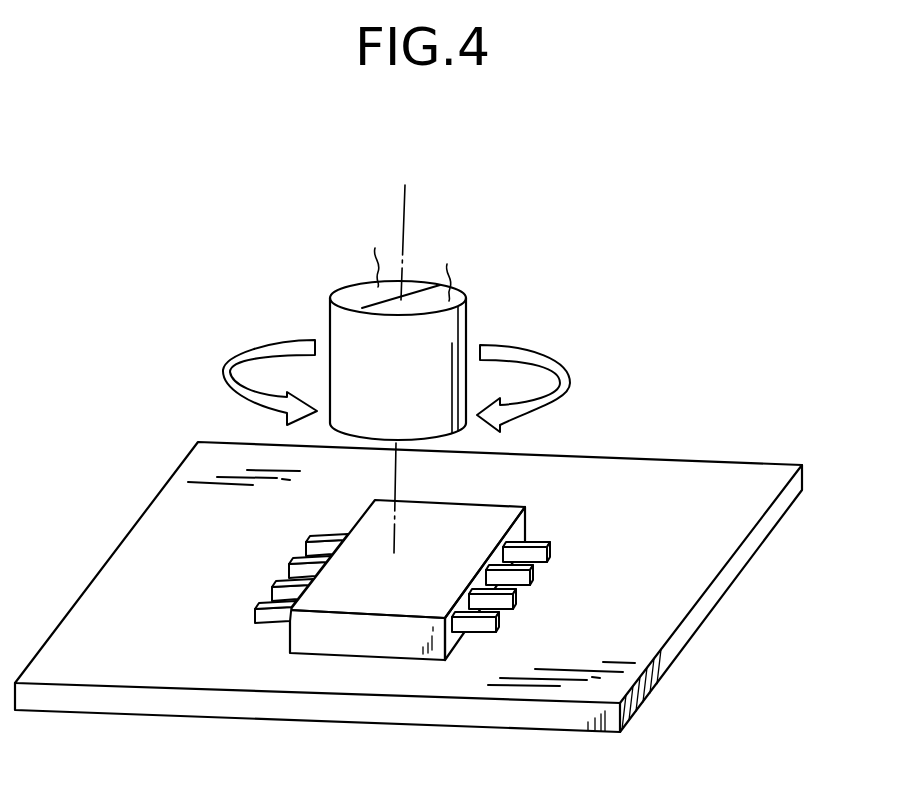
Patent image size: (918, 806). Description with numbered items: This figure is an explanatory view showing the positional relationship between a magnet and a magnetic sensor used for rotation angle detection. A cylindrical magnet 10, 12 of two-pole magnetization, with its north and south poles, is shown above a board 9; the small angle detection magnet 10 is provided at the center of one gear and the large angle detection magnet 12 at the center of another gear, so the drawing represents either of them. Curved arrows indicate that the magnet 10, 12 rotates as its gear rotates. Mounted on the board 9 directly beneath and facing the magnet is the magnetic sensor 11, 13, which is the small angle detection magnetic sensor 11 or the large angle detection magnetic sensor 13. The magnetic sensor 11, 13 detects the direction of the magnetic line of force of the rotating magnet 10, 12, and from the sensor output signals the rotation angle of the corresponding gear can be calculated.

The board 9 is at (112, 610).
The small angle detection magnet 10 is at (434, 325).
The large angle detection magnet 12 is at (462, 331).
The small angle detection magnetic sensor 11 is at (486, 529).
The large angle detection magnetic sensor 13 is at (477, 518).